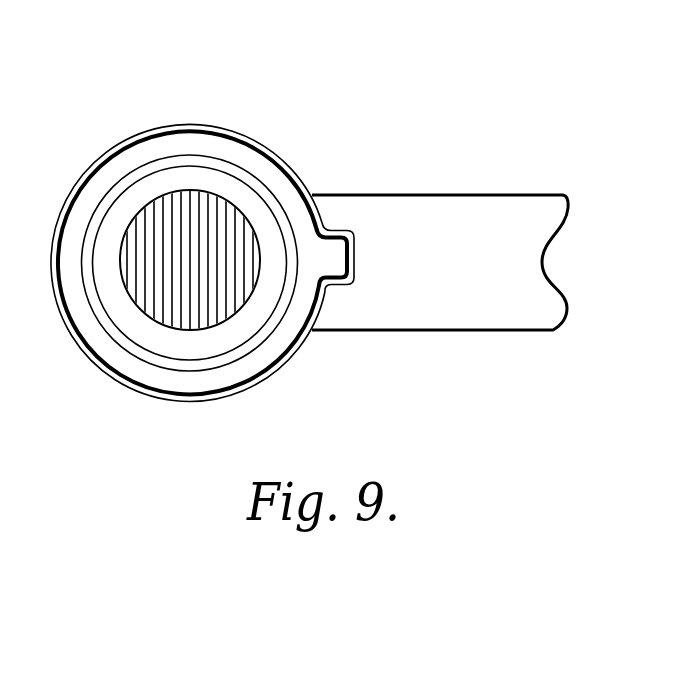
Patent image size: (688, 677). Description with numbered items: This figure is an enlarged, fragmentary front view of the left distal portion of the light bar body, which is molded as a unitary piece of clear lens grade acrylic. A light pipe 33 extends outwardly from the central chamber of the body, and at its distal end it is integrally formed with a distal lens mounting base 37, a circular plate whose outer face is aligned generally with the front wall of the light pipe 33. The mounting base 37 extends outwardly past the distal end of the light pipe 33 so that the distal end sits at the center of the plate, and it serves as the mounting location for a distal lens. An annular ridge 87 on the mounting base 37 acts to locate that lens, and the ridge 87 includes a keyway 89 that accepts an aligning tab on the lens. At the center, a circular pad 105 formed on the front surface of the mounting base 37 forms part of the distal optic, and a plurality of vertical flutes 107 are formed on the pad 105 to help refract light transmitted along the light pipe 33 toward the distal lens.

The light pipe 33 is at (430, 195).
The distal lens mounting base 37 is at (243, 130).
The annular ridge 87 is at (317, 317).
The keyway 89 is at (332, 263).
The circular pad 105 is at (177, 192).
The vertical flutes 107 is at (210, 312).